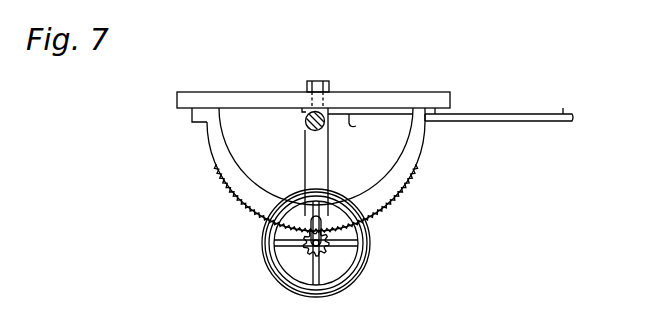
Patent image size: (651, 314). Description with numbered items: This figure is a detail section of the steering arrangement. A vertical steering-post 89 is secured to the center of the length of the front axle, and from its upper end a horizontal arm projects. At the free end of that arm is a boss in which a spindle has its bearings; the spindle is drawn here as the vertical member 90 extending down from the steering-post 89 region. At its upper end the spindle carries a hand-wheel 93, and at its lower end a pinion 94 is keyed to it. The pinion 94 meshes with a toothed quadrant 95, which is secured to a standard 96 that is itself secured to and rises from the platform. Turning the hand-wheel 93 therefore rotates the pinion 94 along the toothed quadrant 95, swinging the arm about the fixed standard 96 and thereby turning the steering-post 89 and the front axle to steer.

The steering-post 89 is at (307, 127).
The pendulum arm 90 is at (381, 152).
The hand-wheel 93 is at (362, 242).
The pinion 94 is at (323, 256).
The toothed quadrant 95 is at (397, 192).
The standard 96 is at (367, 101).